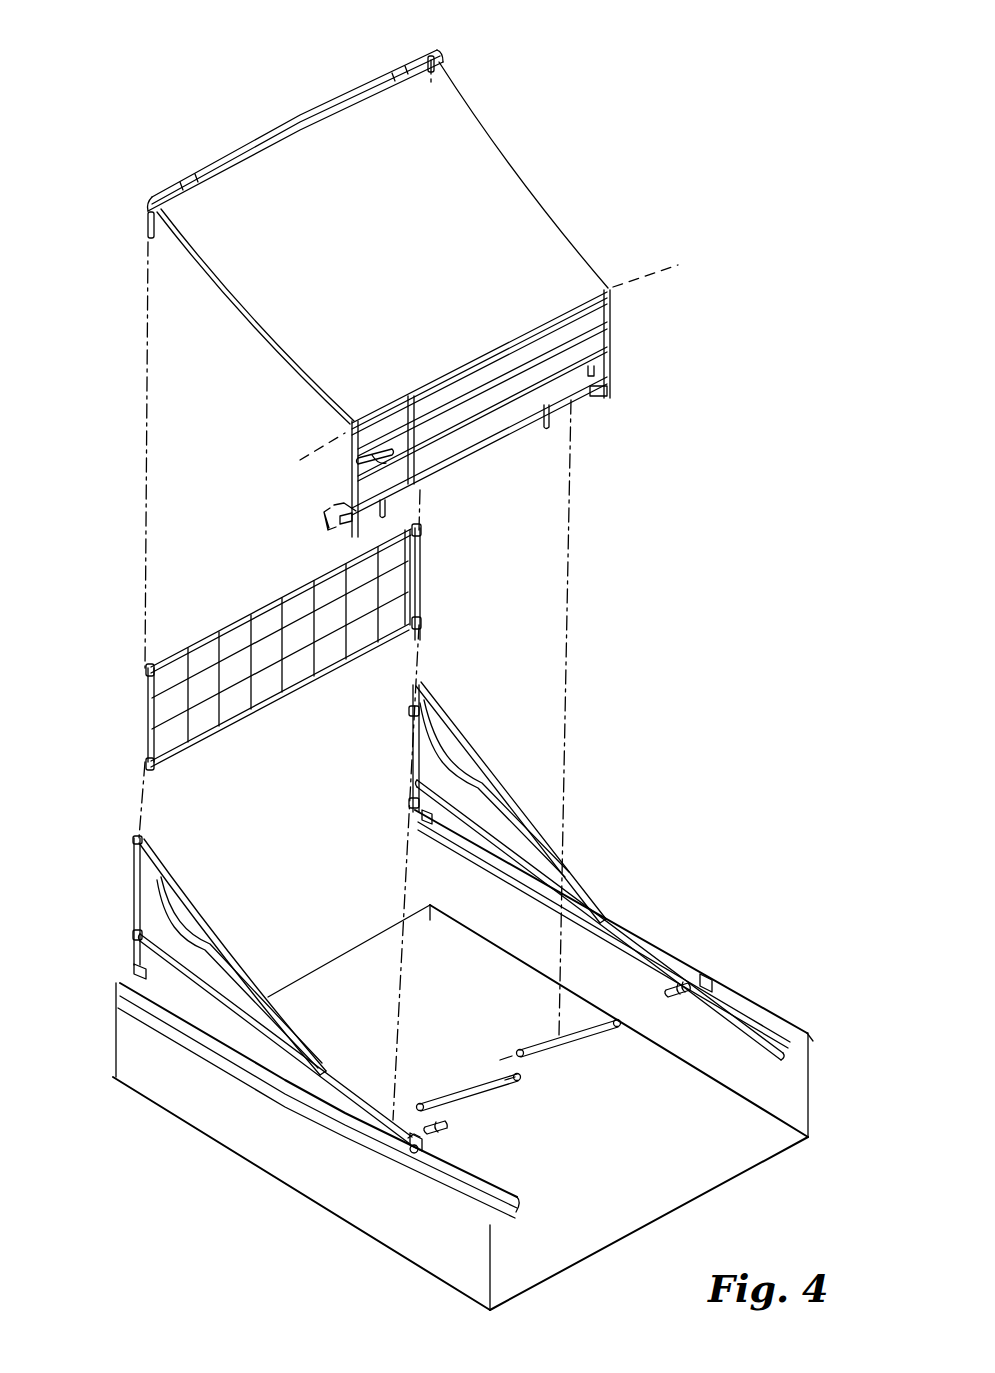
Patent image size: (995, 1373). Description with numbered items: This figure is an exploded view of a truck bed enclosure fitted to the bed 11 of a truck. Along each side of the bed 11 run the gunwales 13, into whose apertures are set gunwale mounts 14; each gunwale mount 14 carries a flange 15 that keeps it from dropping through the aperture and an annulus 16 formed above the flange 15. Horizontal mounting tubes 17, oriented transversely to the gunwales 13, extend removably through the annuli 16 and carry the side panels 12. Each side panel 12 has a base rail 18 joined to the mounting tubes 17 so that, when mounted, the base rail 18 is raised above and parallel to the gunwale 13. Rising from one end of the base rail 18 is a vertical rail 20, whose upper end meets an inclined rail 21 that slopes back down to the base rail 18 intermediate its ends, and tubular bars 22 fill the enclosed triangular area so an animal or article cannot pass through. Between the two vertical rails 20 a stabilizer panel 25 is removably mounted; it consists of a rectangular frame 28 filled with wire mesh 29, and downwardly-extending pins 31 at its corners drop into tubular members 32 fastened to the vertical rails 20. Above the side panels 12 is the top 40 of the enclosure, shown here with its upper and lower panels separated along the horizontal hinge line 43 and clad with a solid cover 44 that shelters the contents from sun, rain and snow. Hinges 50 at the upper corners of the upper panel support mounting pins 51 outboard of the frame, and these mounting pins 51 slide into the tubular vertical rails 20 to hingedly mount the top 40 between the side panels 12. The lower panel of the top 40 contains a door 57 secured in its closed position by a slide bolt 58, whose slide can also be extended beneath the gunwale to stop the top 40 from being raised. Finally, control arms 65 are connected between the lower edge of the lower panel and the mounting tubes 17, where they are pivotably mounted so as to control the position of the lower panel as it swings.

The truck bed 11 is at (745, 1152).
The side panel 12 is at (518, 806).
The gunwale 13 is at (755, 1020).
The gunwale mount 14 is at (426, 808).
The flange 15 is at (412, 1148).
The annulus 16 is at (406, 1142).
The mounting tube 17 is at (687, 982).
The base rail 18 is at (622, 928).
The vertical rail 20 is at (416, 740).
The inclined rail 21 is at (470, 745).
The tubular bar 22 is at (482, 782).
The stabilizer panel 25 is at (232, 640).
The rectangular frame 28 is at (265, 603).
The wire mesh 29 is at (398, 560).
The pin 31 is at (420, 528).
The tubular member 32 is at (405, 712).
The top 40 is at (537, 157).
The hinge line 43 is at (660, 253).
The solid cover 44 is at (572, 272).
The hinge 50 is at (397, 60).
The mounting pin 51 is at (440, 78).
The door 57 is at (396, 460).
The slide bolt 58 is at (350, 472).
The control arm 65 is at (585, 1046).